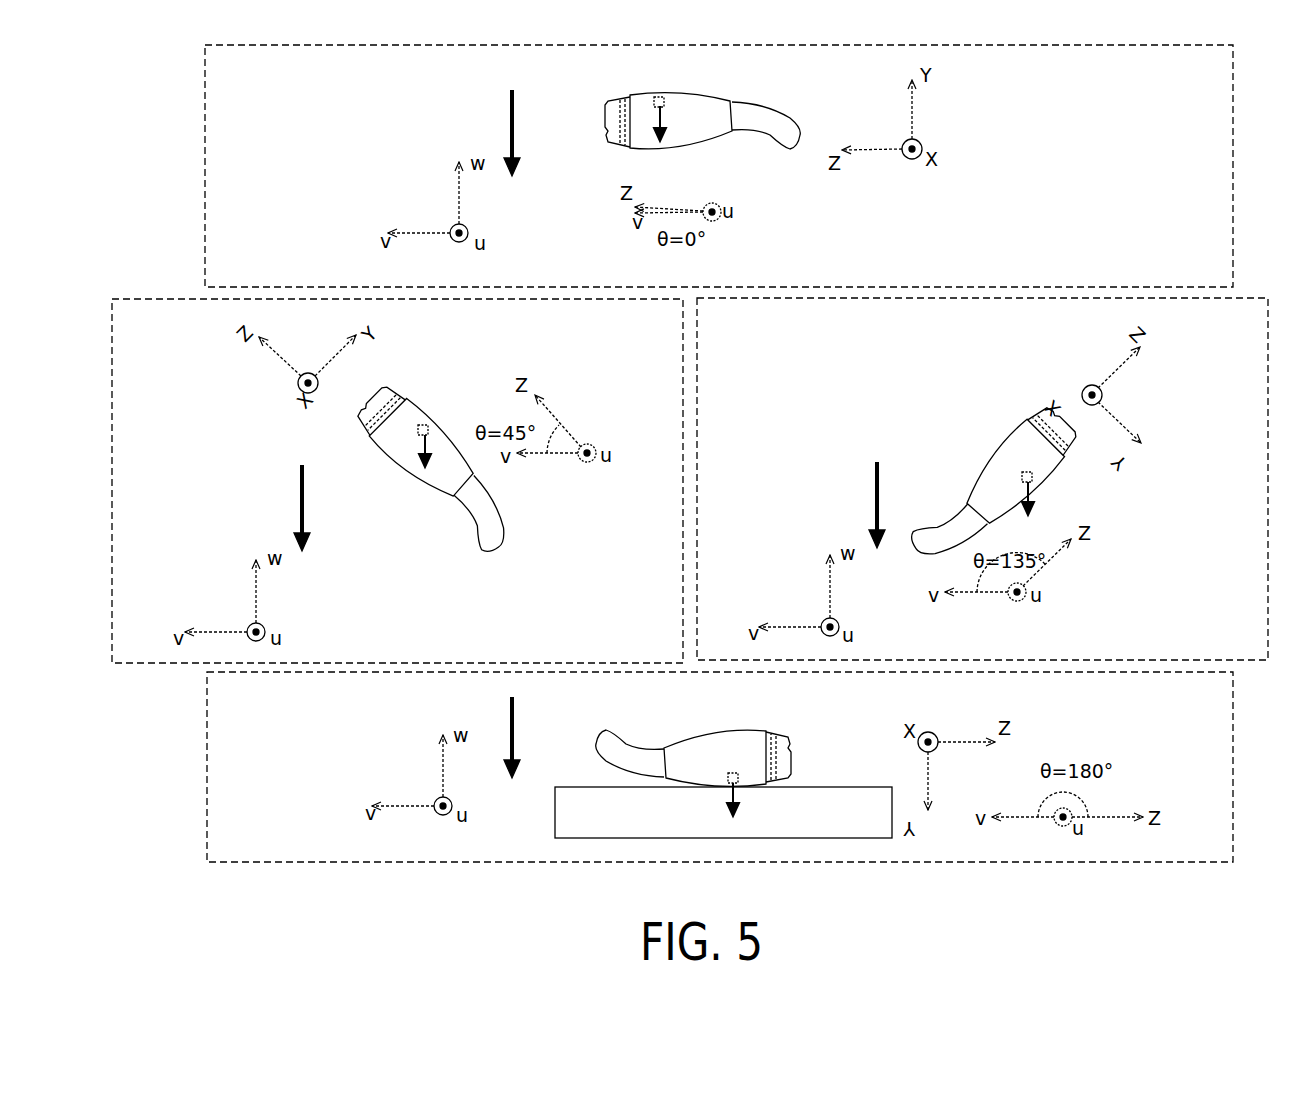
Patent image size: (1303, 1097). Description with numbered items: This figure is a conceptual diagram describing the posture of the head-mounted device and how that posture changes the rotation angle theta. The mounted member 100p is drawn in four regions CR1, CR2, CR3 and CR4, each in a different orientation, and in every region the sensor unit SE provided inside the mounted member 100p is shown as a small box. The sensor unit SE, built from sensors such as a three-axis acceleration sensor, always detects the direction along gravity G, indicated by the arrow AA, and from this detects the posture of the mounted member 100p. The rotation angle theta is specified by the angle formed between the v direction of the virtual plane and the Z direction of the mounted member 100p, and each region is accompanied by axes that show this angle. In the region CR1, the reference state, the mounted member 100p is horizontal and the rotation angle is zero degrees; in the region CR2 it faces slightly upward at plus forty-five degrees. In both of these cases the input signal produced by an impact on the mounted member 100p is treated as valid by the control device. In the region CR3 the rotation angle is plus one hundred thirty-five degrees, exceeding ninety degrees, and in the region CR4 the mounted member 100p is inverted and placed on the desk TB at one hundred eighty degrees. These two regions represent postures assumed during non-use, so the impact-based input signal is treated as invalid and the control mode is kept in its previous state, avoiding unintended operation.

The mounted member 100p is at (648, 99).
The sensor unit SE is at (666, 98).
The arrow AA is at (657, 110).
The gravity G is at (516, 124).
The desk TB is at (831, 800).
The region CR1 is at (1237, 148).
The region CR2 is at (160, 298).
The region CR3 is at (1253, 297).
The region CR4 is at (1236, 778).